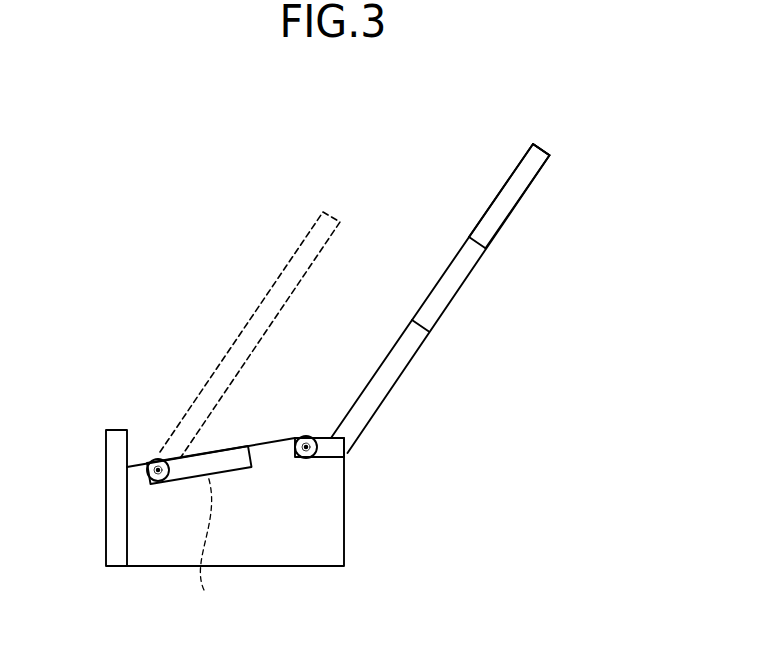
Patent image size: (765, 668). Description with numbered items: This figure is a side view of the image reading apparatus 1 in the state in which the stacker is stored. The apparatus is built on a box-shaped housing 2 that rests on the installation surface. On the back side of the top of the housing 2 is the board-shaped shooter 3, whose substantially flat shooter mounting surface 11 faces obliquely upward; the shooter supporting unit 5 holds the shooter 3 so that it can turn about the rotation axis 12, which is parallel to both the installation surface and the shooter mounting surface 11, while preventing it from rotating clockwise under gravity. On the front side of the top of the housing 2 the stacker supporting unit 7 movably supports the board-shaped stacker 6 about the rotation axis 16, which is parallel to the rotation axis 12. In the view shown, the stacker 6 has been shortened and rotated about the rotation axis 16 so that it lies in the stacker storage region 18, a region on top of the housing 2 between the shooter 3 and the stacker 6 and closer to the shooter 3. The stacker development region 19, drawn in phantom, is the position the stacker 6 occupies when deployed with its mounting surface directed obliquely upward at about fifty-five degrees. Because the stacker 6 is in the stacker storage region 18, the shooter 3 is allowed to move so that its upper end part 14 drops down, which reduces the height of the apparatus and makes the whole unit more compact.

The image reading apparatus 1 is at (588, 116).
The housing 2 is at (345, 541).
The shooter 3 is at (402, 377).
The shooter supporting unit 5 is at (305, 436).
The stacker 6 is at (219, 452).
The stacker supporting unit 7 is at (160, 459).
The shooter mounting surface 11 is at (502, 188).
The rotation axis 12 is at (305, 456).
The end part 14 is at (542, 147).
The rotation axis 16 is at (147, 468).
The stacker storage region 18 is at (206, 546).
The stacker development region 19 is at (288, 260).